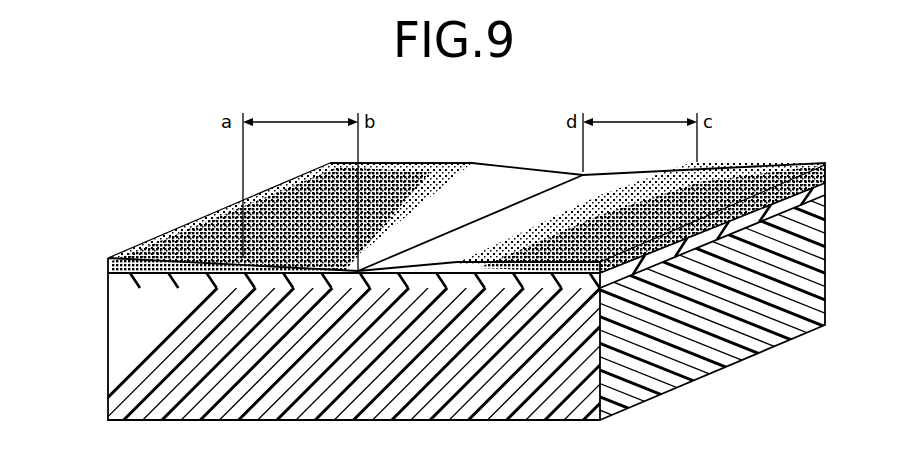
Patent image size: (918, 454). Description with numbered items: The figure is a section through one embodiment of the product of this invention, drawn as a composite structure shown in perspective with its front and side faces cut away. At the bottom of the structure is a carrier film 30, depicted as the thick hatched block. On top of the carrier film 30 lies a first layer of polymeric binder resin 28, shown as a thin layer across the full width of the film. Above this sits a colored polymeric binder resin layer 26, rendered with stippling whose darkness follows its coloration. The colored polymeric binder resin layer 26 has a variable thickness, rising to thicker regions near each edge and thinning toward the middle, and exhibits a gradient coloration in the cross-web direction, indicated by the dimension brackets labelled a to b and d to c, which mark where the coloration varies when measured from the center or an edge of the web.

The colored polymeric binder resin layer 26 is at (108, 265).
The first layer of polymeric binder resin 28 is at (115, 280).
The carrier film 30 is at (115, 352).